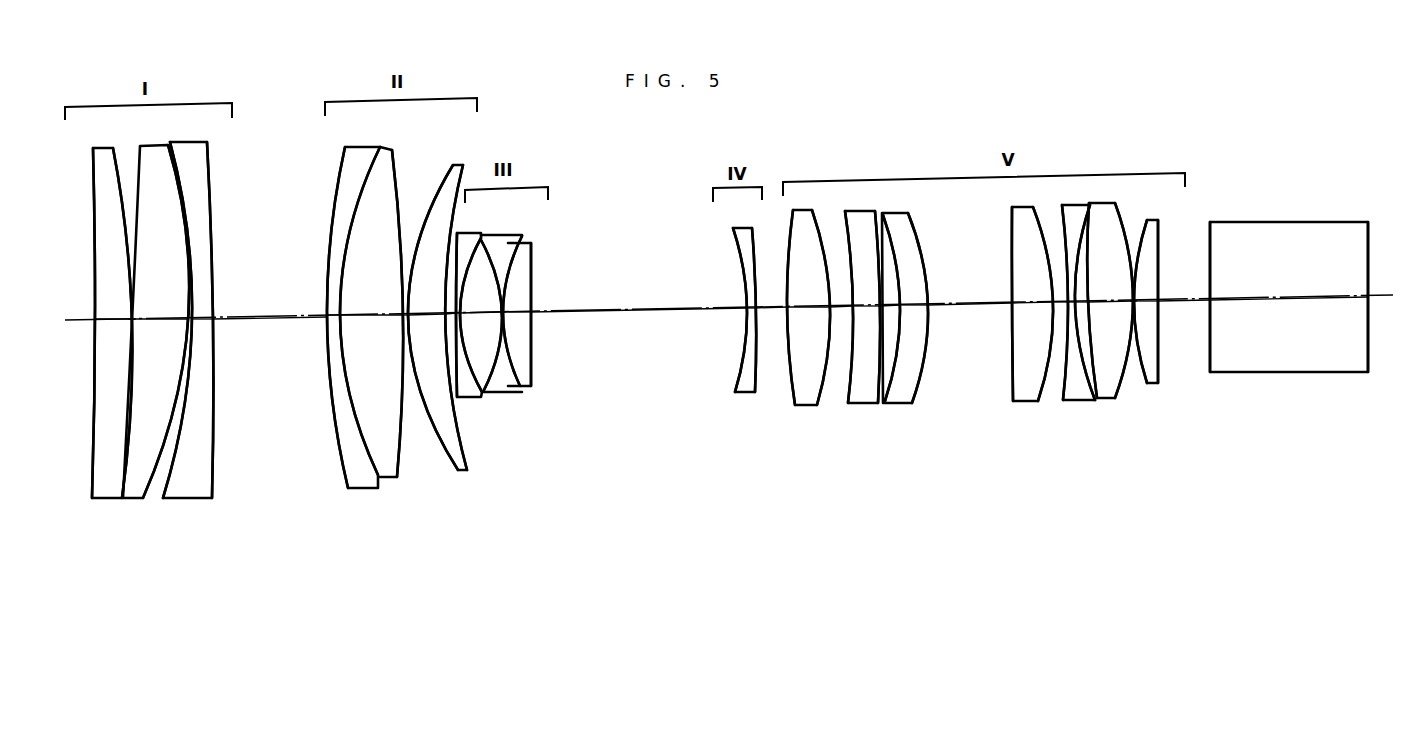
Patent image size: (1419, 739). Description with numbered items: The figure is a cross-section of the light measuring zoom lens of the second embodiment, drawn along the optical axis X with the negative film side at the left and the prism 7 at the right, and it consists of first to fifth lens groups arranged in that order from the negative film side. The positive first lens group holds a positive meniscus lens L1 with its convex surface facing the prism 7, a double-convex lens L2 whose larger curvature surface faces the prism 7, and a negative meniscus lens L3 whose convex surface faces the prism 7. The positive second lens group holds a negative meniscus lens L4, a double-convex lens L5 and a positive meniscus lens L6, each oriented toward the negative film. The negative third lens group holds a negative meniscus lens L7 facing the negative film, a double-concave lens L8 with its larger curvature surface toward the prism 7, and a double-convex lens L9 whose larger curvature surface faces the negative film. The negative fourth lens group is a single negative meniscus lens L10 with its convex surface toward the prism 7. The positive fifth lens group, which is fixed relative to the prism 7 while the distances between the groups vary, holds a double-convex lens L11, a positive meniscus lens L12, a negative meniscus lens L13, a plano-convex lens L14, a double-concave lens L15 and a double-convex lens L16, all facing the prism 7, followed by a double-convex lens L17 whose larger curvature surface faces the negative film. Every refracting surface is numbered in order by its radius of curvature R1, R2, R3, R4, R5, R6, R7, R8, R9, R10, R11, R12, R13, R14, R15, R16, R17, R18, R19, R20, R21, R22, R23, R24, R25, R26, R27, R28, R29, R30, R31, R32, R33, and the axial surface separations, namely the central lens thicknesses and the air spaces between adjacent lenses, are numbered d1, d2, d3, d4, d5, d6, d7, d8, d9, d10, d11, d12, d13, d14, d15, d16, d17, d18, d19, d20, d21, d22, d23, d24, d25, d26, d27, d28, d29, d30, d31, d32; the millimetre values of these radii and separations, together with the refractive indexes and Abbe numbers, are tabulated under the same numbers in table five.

The positive meniscus lens L1 is at (102, 155).
The double-convex lens L2 is at (156, 155).
The negative meniscus lens L3 is at (198, 152).
The negative meniscus lens L4 is at (362, 152).
The double-convex lens L5 is at (392, 150).
The positive meniscus lens L6 is at (450, 165).
The negative meniscus lens L7 is at (472, 236).
The double-concave lens L8 is at (510, 240).
The double-convex lens L9 is at (525, 260).
The negative meniscus lens L10 is at (745, 230).
The double-convex lens L11 is at (808, 220).
The positive meniscus lens L12 is at (862, 222).
The negative meniscus lens L13 is at (912, 228).
The plano-convex lens L14 is at (1022, 215).
The double-concave lens L15 is at (1078, 215).
The double-convex lens L16 is at (1104, 220).
The double-convex lens L17 is at (1153, 228).
The axial surface separation d1 is at (113, 306).
The axial surface separation d2 is at (133, 318).
The axial surface separation d3 is at (160, 306).
The axial surface separation d4 is at (205, 318).
The axial surface separation d5 is at (270, 306).
The axial surface separation d6 is at (333, 312).
The axial surface separation d7 is at (371, 304).
The axial surface separation d8 is at (404, 313).
The axial surface separation d9 is at (426, 304).
The axial surface separation d10 is at (450, 320).
The axial surface separation d11 is at (461, 315).
The axial surface separation d12 is at (487, 318).
The axial surface separation d13 is at (510, 300).
The axial surface separation d14 is at (516, 310).
The axial surface separation d15 is at (639, 300).
The axial surface separation d16 is at (746, 308).
The axial surface separation d17 is at (770, 312).
The axial surface separation d18 is at (808, 296).
The axial surface separation d19 is at (843, 310).
The axial surface separation d20 is at (870, 310).
The axial surface separation d21 is at (893, 300).
The axial surface separation d22 is at (905, 290).
The axial surface separation d23 is at (935, 305).
The axial surface separation d24 is at (1023, 303).
The axial surface separation d25 is at (1058, 310).
The axial surface separation d26 is at (1072, 300).
The axial surface separation d27 is at (1082, 312).
The axial surface separation d28 is at (1094, 303).
The axial surface separation d29 is at (1137, 297).
The axial surface separation d30 is at (1142, 306).
The axial surface separation d31 is at (1184, 289).
The axial surface separation d32 is at (1289, 288).
The radius of curvature R1 is at (92, 458).
The radius of curvature R2 is at (122, 490).
The radius of curvature R3 is at (143, 490).
The radius of curvature R4 is at (165, 485).
The radius of curvature R5 is at (213, 482).
The radius of curvature R6 is at (335, 440).
The radius of curvature R7 is at (368, 482).
The radius of curvature R8 is at (398, 480).
The radius of curvature R9 is at (445, 458).
The radius of curvature R10 is at (465, 475).
The radius of curvature R11 is at (462, 402).
The radius of curvature R12 is at (483, 395).
The radius of curvature R13 is at (520, 395).
The radius of curvature R14 is at (520, 390).
The radius of curvature R15 is at (535, 375).
The radius of curvature R16 is at (740, 380).
The radius of curvature R17 is at (755, 392).
The radius of curvature R18 is at (796, 395).
The radius of curvature R19 is at (818, 405).
The radius of curvature R20 is at (848, 402).
The radius of curvature R21 is at (880, 402).
The radius of curvature R22 is at (900, 400).
The radius of curvature R23 is at (928, 378).
The radius of curvature R24 is at (1013, 402).
The radius of curvature R25 is at (1040, 400).
The radius of curvature R26 is at (1063, 402).
The radius of curvature R27 is at (1097, 400).
The radius of curvature R28 is at (1118, 400).
The radius of curvature R29 is at (1125, 400).
The radius of curvature R30 is at (1147, 385).
The radius of curvature R31 is at (1158, 380).
The radius of curvature R32 is at (1212, 373).
The radius of curvature R33 is at (1368, 368).
The prism 7 is at (1302, 222).
The optical axis X is at (1390, 295).